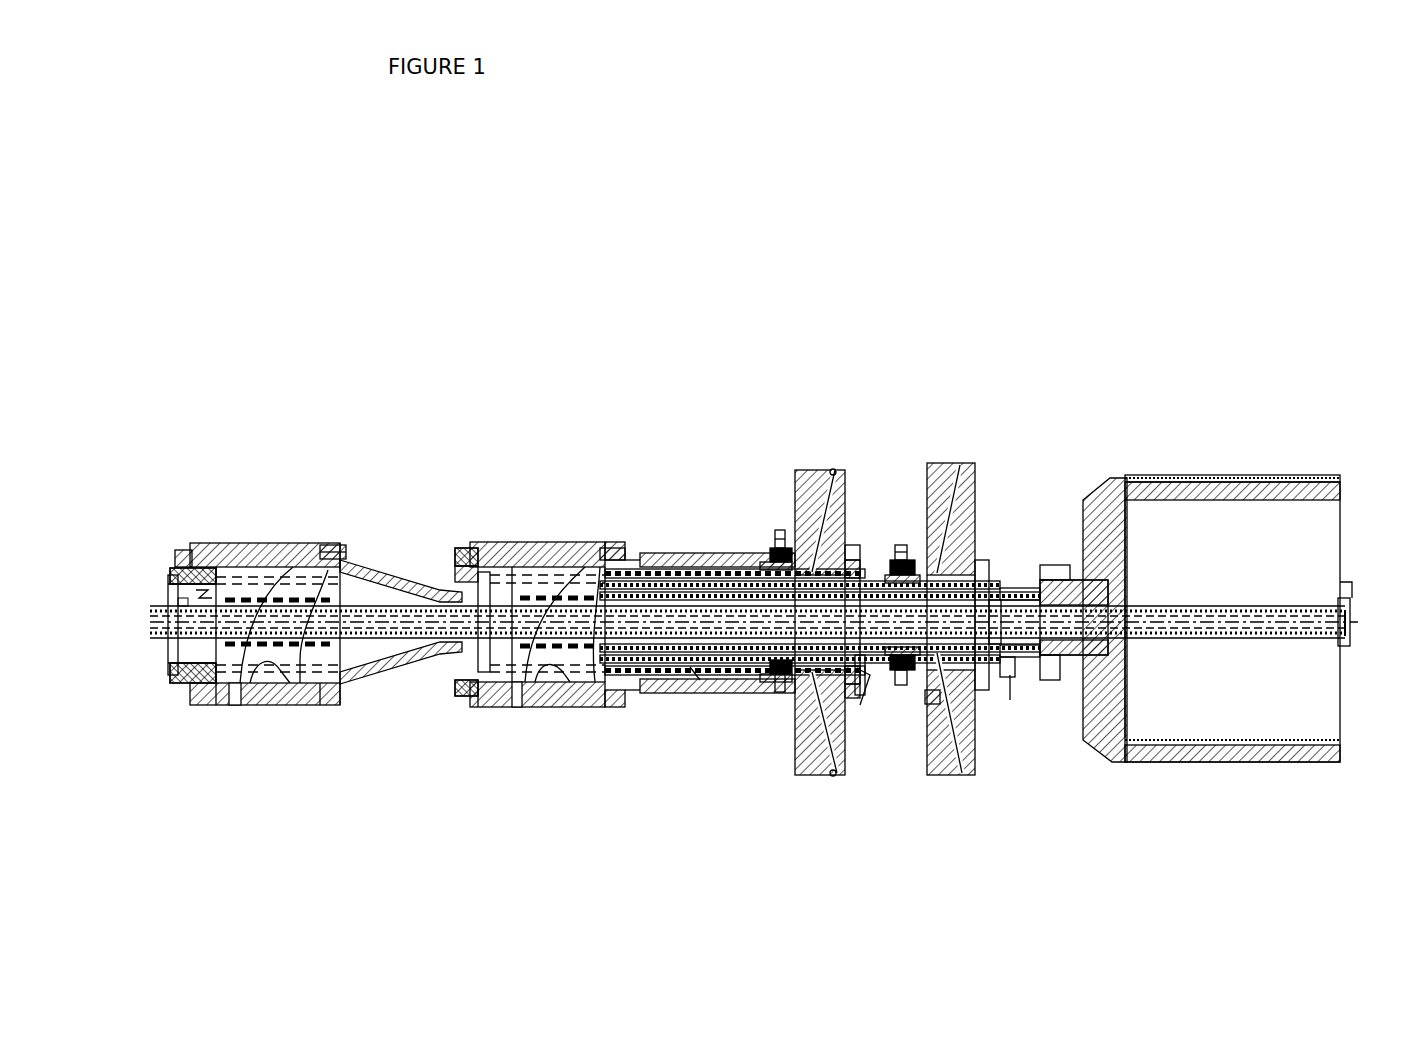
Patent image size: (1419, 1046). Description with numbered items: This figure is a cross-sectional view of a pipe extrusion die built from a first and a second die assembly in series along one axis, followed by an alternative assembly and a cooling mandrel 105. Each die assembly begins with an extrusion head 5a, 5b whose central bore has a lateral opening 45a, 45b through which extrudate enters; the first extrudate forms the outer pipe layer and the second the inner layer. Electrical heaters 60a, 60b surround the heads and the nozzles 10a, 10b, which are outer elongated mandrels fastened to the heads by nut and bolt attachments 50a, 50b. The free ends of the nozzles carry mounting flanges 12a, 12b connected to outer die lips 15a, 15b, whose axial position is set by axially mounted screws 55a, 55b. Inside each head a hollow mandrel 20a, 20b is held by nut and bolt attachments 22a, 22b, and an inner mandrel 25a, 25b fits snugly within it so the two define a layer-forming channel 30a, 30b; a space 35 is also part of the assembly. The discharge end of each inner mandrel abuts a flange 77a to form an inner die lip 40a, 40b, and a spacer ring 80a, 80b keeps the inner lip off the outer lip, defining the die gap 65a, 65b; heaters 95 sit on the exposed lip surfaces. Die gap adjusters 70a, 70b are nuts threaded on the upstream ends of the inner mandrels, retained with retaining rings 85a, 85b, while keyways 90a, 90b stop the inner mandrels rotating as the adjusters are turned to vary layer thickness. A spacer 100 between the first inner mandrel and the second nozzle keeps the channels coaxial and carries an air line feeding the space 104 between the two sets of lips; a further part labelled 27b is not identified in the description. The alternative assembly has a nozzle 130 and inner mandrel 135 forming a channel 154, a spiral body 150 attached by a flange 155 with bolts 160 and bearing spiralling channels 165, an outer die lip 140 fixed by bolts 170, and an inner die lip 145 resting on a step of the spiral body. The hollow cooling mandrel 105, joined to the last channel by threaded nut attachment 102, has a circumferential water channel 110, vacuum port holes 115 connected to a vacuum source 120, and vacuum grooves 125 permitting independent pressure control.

The first extrusion head 5a is at (445, 544).
The second extrusion head 5b is at (171, 540).
The first nozzle 10a is at (735, 574).
The second nozzle 10b is at (377, 568).
The first mounting flange 12a is at (745, 586).
The second mounting flange 12b is at (879, 605).
The first outer die lip 15a is at (656, 556).
The second outer die lip 15b is at (582, 564).
The first hollow mandrel 20a is at (445, 712).
The second hollow mandrel 20b is at (160, 717).
The nut and bolt attachment 22a is at (455, 556).
The nut and bolt attachment 22b is at (182, 568).
The first inner mandrel 25a is at (642, 717).
The second inner mandrel 25b is at (300, 729).
The spacer 27b is at (995, 573).
The first layer-forming channel 30a is at (736, 694).
The second layer-forming channel 30b is at (676, 553).
The space 35 is at (547, 542).
The first inner die lip 40a is at (858, 558).
The second inner die lip 40b is at (962, 520).
The first lateral opening 45a is at (487, 723).
The second lateral opening 45b is at (201, 729).
The nut and bolt attachment 50a is at (612, 538).
The nut and bolt attachment 50b is at (320, 537).
The axially mounted screw 55a is at (746, 568).
The axially mounted screw 55b is at (890, 590).
The electrical heater 60a is at (520, 540).
The electrical heater 60b is at (252, 542).
The first die gap 65a is at (814, 776).
The second die gap 65b is at (990, 765).
The die gap adjuster 70a is at (478, 582).
The die gap adjuster 70b is at (168, 584).
The flange 77a is at (861, 696).
The spacer ring 80a is at (795, 740).
The spacer ring 80b is at (935, 719).
The retaining ring 85a is at (456, 694).
The retaining ring 85b is at (176, 690).
The keyway 90a is at (408, 580).
The keyway 90b is at (175, 604).
The heaters 95 is at (792, 472).
The spacer 100 is at (896, 695).
The threaded nut attachment 102 is at (1353, 613).
The space 104 is at (852, 544).
The cooling mandrel 105 is at (1232, 618).
The channel 110 is at (1328, 742).
The vacuum port holes 115 is at (1146, 482).
The vacuum source 120 is at (1256, 486).
The vacuum groove 125 is at (1190, 484).
The nozzle 130 is at (1009, 677).
The inner mandrel 135 is at (1030, 575).
The outer die lip 140 is at (1085, 500).
The inner die lip 145 is at (1125, 565).
The spiral body 150 is at (1098, 641).
The channel 154 is at (1010, 676).
The flange 155 is at (1028, 691).
The bolts 160 is at (980, 668).
The spiralling channels 165 is at (1042, 544).
The bolts 170 is at (1040, 705).